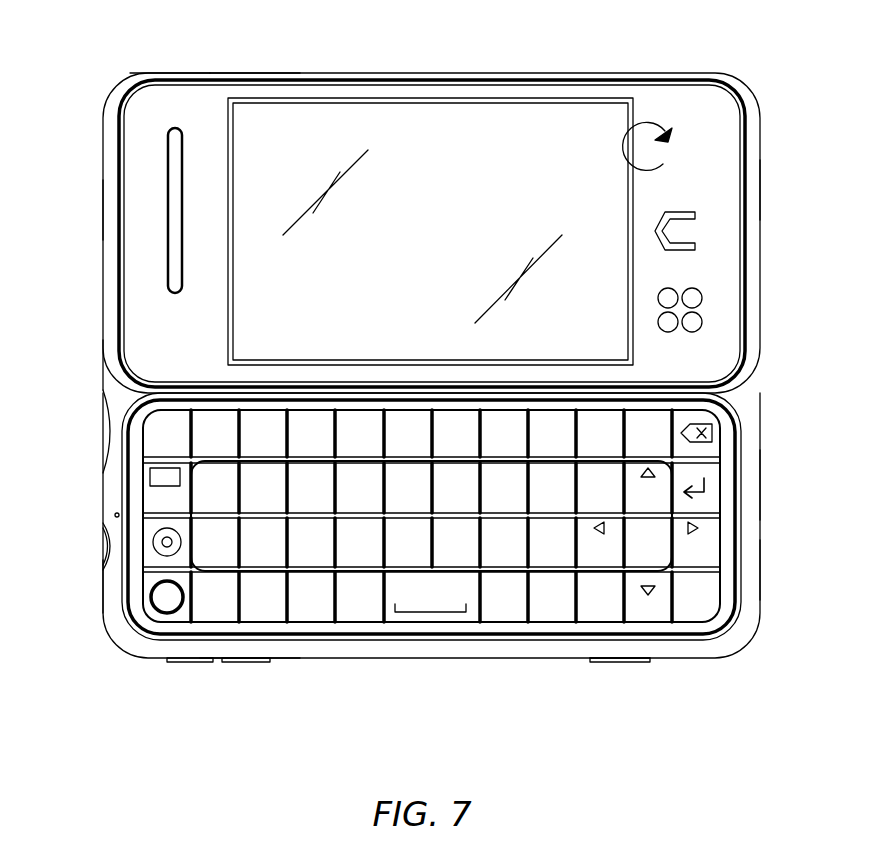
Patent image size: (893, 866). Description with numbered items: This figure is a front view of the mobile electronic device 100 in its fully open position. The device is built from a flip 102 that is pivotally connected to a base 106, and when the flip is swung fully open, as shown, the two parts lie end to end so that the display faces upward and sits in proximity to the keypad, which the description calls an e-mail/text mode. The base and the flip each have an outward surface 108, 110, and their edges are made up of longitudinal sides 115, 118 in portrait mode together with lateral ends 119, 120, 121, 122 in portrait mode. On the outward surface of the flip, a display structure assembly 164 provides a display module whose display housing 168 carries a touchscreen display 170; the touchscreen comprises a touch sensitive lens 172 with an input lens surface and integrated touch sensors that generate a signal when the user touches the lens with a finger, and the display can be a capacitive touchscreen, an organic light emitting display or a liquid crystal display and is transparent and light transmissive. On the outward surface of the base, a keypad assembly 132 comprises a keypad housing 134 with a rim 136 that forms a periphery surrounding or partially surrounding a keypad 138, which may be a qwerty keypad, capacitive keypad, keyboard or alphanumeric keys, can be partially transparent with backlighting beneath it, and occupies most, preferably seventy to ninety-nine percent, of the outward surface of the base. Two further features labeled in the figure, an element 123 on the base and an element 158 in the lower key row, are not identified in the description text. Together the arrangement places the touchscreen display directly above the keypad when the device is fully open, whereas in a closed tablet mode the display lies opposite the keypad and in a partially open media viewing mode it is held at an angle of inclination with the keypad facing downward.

The mobile electronic device 100 is at (103, 365).
The flip 102 is at (140, 78).
The base 106 is at (725, 655).
The outward surface 108 is at (431, 554).
The outward surface 110 is at (142, 152).
The longitudinal side 115 is at (596, 660).
The longitudinal side 118 is at (165, 73).
The lateral end 119 is at (105, 548).
The lateral end 120 is at (103, 213).
The lateral end 121 is at (760, 188).
The lateral end 122 is at (760, 486).
The side edge of lower housing 123 is at (760, 570).
The keypad assembly 132 is at (109, 627).
The keypad housing 134 is at (240, 650).
The rim 136 is at (103, 413).
The keypad 138 is at (285, 612).
The key 158 is at (205, 612).
The display structure assembly 164 is at (235, 73).
The display housing 168 is at (117, 249).
The touchscreen display 170 is at (430, 199).
The touch sensitive lens 172 is at (418, 100).